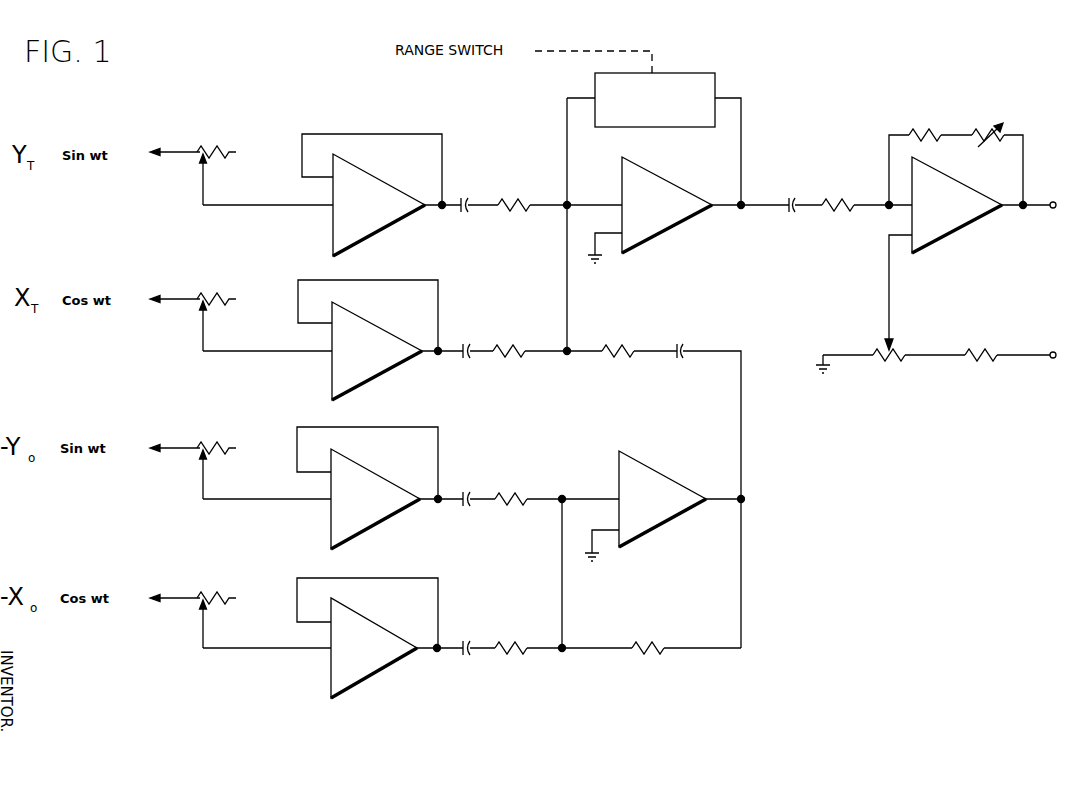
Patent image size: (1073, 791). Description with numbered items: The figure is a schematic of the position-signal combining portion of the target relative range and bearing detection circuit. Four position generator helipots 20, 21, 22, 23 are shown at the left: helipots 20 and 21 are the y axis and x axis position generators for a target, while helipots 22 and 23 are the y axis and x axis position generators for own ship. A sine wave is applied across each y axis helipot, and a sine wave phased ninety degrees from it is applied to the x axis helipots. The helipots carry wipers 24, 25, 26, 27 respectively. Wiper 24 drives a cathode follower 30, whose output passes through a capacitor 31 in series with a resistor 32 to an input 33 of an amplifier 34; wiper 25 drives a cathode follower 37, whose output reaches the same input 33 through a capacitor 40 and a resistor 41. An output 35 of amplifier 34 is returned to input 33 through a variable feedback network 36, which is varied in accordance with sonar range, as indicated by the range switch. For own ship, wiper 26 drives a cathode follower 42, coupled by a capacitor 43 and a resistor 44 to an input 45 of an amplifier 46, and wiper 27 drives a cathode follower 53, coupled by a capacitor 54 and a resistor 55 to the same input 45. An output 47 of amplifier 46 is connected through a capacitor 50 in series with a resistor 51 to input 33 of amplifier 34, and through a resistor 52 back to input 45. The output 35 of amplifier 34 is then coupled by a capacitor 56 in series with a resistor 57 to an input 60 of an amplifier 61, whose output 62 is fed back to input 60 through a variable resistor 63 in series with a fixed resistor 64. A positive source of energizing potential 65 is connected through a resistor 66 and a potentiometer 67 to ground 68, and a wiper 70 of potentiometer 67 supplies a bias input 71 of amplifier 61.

The position generator helipot 20 is at (205, 148).
The position generator helipot 21 is at (203, 296).
The position generator helipot 22 is at (204, 446).
The position generator helipot 23 is at (204, 595).
The wiper 24 is at (202, 161).
The wiper 25 is at (203, 308).
The wiper 26 is at (203, 456).
The wiper 27 is at (203, 606).
The cathode follower 30 is at (372, 175).
The capacitor 31 is at (463, 197).
The resistor 32 is at (508, 197).
The input 33 is at (569, 203).
The amplifier 34 is at (659, 177).
The output 35 is at (738, 202).
The variable feedback network 36 is at (702, 73).
The cathode follower 37 is at (373, 324).
The capacitor 40 is at (463, 345).
The resistor 41 is at (509, 345).
The cathode follower 42 is at (370, 470).
The capacitor 43 is at (464, 492).
The resistor 44 is at (510, 492).
The input 45 is at (561, 495).
The amplifier 46 is at (663, 477).
The output 47 is at (742, 499).
The capacitor 50 is at (678, 345).
The resistor 51 is at (612, 345).
The resistor 52 is at (648, 645).
The cathode follower 53 is at (367, 620).
The capacitor 54 is at (464, 641).
The resistor 55 is at (510, 642).
The capacitor 56 is at (787, 200).
The resistor 57 is at (840, 198).
The input 60 is at (888, 210).
The amplifier 61 is at (961, 182).
The output 62 is at (1050, 210).
The variable resistor 63 is at (982, 130).
The fixed resistor 64 is at (920, 130).
The positive source of energizing potential 65 is at (1050, 350).
The resistor 66 is at (975, 346).
The potentiometer 67 is at (886, 358).
The ground 68 is at (842, 368).
The wiper 70 is at (883, 340).
The bias input 71 is at (907, 251).